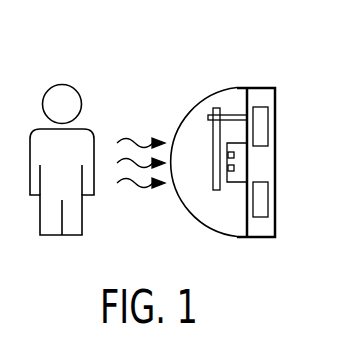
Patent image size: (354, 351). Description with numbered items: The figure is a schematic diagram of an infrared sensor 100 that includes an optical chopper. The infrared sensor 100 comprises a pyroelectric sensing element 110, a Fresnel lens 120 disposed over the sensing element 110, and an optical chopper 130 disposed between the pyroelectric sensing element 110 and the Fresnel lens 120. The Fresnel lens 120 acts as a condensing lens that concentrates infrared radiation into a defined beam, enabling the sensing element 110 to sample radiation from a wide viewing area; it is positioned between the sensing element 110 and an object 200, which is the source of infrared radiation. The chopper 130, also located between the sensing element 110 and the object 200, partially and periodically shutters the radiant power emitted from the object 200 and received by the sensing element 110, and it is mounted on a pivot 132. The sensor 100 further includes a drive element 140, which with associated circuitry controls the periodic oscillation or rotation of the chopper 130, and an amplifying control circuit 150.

The infrared sensor 100 is at (217, 151).
The pyroelectric sensing element 110 is at (242, 153).
The Fresnel lens 120 is at (183, 120).
The optical chopper 130 is at (211, 166).
The pivot 132 is at (240, 114).
The drive element 140 is at (257, 108).
The amplifying control circuit 150 is at (258, 217).
The object 200 is at (63, 85).